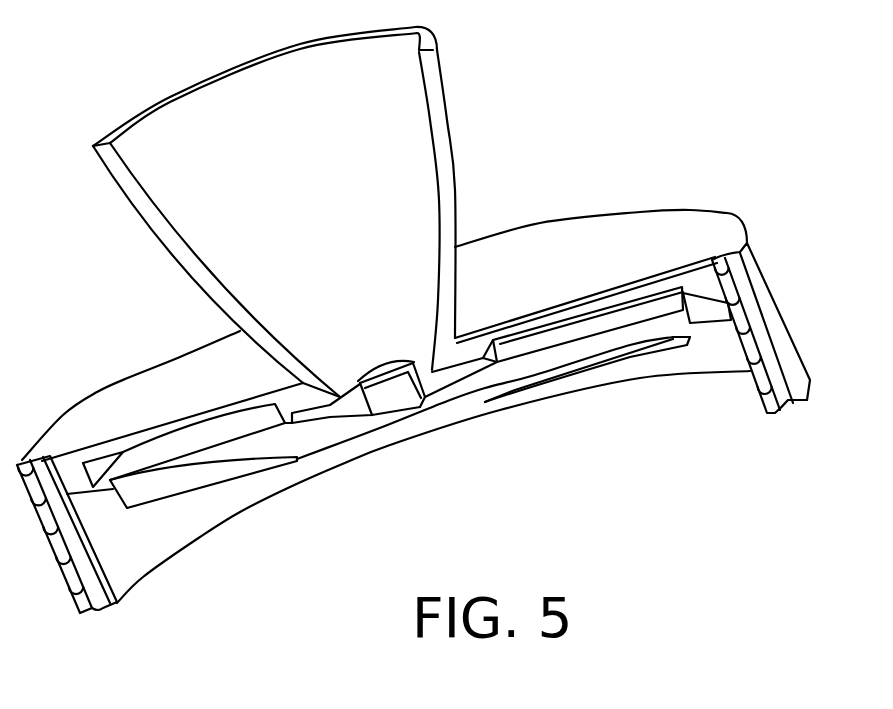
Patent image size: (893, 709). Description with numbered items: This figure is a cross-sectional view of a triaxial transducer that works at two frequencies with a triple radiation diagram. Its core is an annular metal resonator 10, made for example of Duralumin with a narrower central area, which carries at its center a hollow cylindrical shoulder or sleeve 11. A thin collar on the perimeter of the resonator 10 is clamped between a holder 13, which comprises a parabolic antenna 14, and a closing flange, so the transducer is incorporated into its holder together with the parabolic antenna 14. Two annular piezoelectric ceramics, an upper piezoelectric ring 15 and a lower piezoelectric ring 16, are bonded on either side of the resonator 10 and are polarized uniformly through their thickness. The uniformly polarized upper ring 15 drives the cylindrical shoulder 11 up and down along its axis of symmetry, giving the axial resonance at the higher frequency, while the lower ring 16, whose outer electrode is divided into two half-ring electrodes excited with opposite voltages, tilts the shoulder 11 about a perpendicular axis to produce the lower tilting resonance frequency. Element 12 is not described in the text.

The annular metal resonator 10 is at (485, 388).
The hollow cylindrical shoulder 11 is at (377, 394).
The left guide rail 12 is at (107, 498).
The holder 13 is at (167, 376).
The parabolic antenna 14 is at (147, 208).
The upper piezoelectric ring 15 is at (623, 312).
The lower piezoelectric ring 16 is at (645, 357).